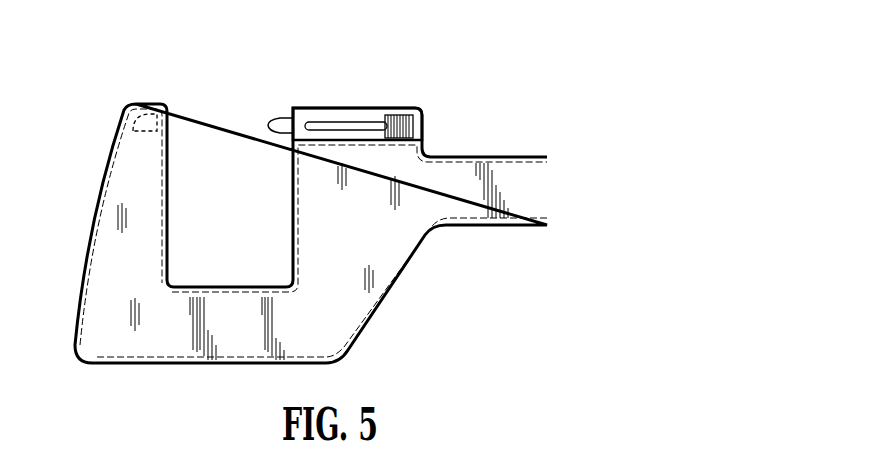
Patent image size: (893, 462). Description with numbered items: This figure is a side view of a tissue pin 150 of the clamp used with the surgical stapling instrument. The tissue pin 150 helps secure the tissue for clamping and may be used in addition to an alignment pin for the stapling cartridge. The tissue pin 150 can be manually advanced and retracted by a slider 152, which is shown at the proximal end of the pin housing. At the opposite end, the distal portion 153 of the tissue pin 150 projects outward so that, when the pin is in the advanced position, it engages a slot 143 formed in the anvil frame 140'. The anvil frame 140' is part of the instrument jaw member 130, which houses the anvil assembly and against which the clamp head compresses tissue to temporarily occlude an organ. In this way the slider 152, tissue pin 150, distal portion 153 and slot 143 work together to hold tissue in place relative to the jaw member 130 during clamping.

The instrument jaw member 130 is at (292, 212).
The anvil frame 140' is at (151, 227).
The slot 143 is at (148, 122).
The tissue pin 150 is at (268, 117).
The slider 152 is at (402, 115).
The distal portion 153 is at (283, 121).